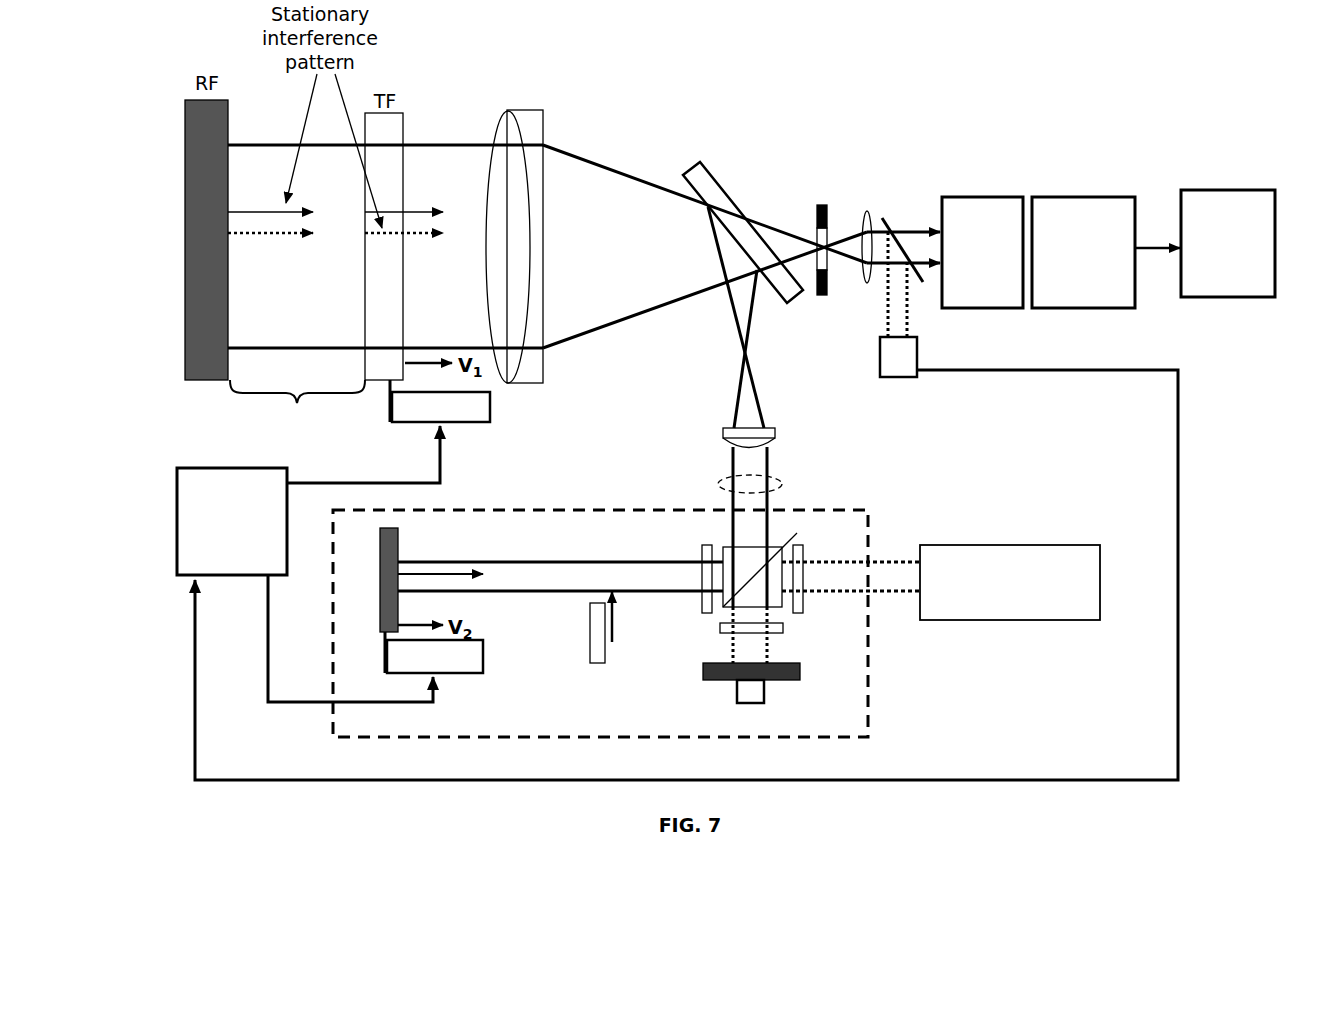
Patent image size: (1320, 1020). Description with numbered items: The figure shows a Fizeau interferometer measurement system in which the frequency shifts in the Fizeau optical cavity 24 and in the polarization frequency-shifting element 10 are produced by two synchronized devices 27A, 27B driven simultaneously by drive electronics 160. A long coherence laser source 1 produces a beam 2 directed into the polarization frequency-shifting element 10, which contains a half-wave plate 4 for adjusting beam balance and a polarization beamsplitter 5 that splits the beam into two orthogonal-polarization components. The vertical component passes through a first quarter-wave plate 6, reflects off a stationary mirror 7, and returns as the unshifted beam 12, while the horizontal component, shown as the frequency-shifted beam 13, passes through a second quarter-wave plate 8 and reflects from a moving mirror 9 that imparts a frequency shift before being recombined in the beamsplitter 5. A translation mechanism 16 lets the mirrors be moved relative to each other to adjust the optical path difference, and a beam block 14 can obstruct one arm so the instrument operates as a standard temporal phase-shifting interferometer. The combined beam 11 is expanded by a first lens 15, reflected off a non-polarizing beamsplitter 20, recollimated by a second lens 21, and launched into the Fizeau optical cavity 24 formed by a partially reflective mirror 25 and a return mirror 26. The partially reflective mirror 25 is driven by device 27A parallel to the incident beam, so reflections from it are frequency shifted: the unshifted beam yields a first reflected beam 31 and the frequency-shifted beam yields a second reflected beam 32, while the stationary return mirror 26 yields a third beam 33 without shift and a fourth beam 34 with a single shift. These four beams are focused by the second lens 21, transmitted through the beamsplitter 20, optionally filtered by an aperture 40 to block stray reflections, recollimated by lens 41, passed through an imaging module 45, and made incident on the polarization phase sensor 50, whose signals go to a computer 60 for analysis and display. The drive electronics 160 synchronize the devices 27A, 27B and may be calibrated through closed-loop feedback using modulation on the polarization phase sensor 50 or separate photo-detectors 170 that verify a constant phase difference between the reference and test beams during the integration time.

The laser source 1 is at (1005, 620).
The beam 2 is at (876, 595).
The half-wave plate 4 is at (803, 563).
The polarization beamsplitter 5 is at (797, 533).
The first quarter-wave plate 6 is at (720, 633).
The stationary mirror 7 is at (703, 668).
The second quarter-wave plate 8 is at (702, 548).
The moving mirror 9 is at (380, 541).
The polarization frequency-shifting element 10 is at (868, 688).
The combined beam 11 is at (717, 483).
The unshifted beam 12 is at (766, 662).
The frequency-shifted beam 13 is at (627, 559).
The beam block 14 is at (589, 645).
The first lens 15 is at (722, 432).
The translation mechanism 16 is at (737, 690).
The beamsplitter 20 is at (699, 160).
The second lens 21 is at (543, 110).
The Fizeau optical cavity 24 is at (297, 407).
The partially reflective mirror 25 is at (365, 113).
The return mirror 26 is at (228, 100).
The synchronized device 27A is at (493, 407).
The synchronized device 27B is at (484, 668).
The first reflected beam 31 is at (416, 237).
The second reflected beam 32 is at (414, 210).
The third beam 33 is at (237, 237).
The fourth beam 34 is at (236, 210).
The aperture 40 is at (822, 203).
The lens 41 is at (868, 210).
The imaging unit 45 is at (955, 308).
The polarization phase sensor 50 is at (1048, 308).
The computer 60 is at (1198, 297).
The drive electronics 160 is at (238, 465).
The photo-detectors 170 is at (893, 378).